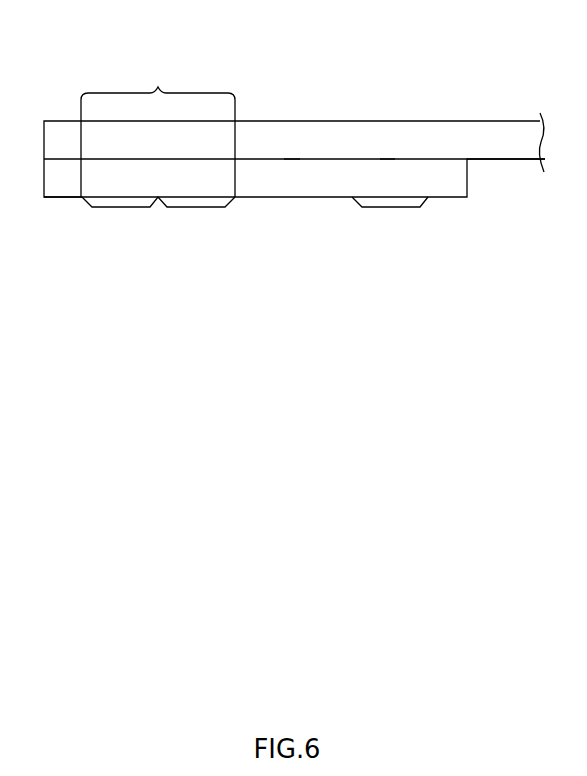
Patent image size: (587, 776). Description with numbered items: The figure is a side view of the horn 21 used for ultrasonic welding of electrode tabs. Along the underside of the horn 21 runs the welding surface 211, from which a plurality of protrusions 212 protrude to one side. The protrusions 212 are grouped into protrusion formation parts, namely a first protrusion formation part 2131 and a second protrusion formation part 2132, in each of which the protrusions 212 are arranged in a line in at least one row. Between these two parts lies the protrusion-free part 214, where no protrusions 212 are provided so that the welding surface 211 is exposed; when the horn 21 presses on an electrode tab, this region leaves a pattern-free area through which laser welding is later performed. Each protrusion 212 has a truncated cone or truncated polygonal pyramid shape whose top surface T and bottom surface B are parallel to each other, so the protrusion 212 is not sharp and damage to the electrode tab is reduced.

The horn 21 is at (450, 82).
The welding surface 211 is at (58, 198).
The protrusions 212 is at (120, 208).
The first protrusion formation part 2131 is at (158, 126).
The second protrusion formation part 2132 is at (387, 193).
The protrusion-free part 214 is at (290, 197).
The bottom surface B is at (99, 140).
The top surface T is at (102, 150).